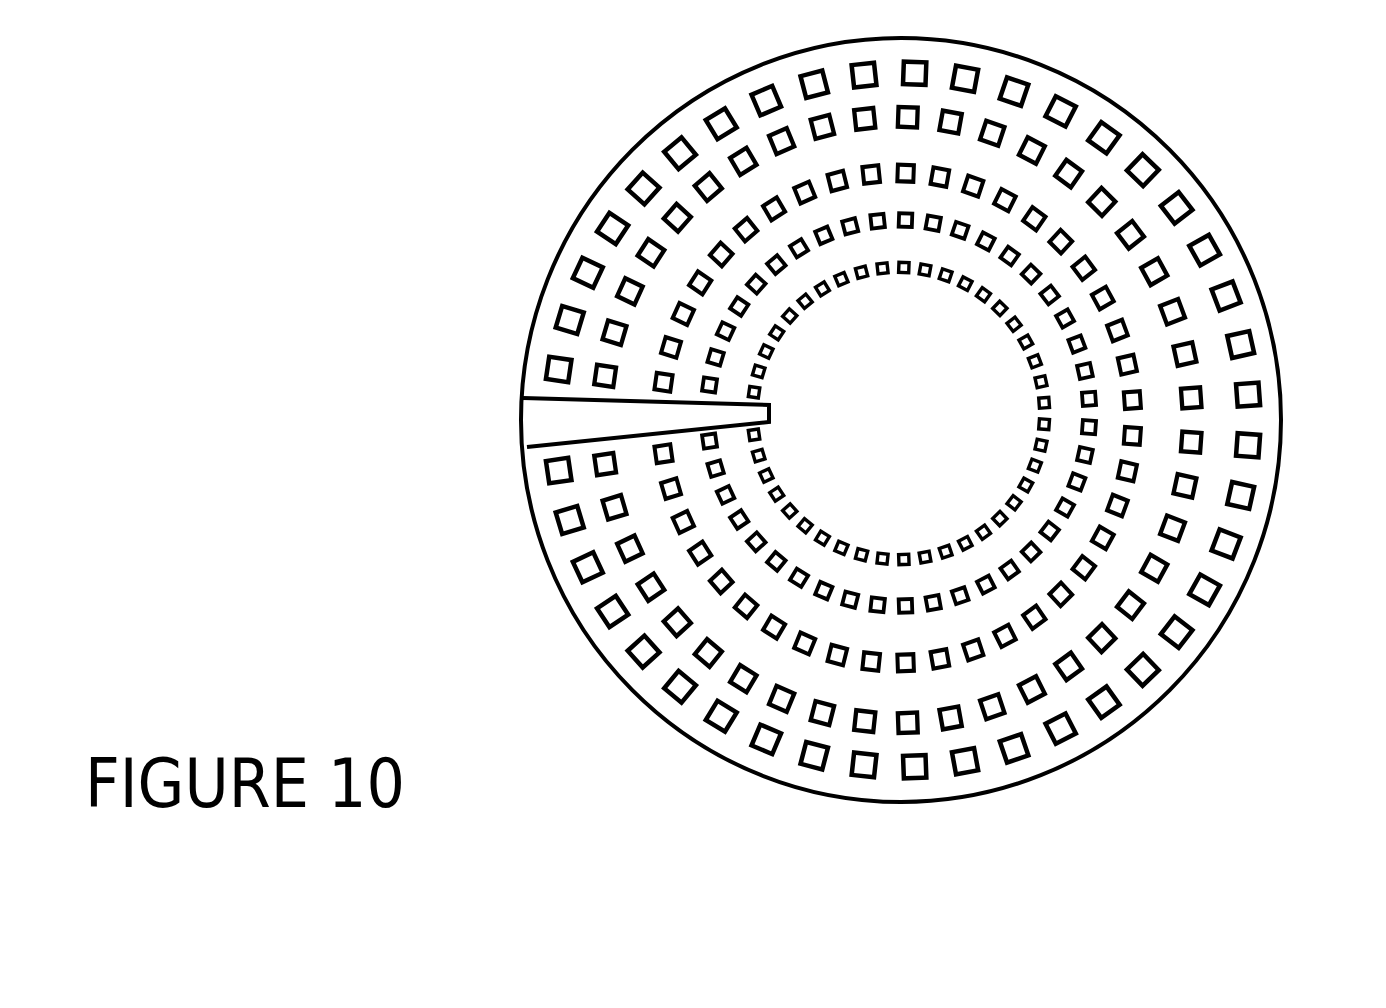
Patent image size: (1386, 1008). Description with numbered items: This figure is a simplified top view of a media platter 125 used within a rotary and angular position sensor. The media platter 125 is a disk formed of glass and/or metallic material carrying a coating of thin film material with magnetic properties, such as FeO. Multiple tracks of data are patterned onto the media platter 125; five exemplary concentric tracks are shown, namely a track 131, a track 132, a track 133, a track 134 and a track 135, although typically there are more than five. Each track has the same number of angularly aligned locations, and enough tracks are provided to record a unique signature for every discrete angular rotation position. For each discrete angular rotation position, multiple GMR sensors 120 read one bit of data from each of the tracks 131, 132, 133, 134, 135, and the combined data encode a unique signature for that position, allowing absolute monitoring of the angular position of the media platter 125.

The GMR sensors 120 is at (540, 419).
The media platter 125 is at (915, 802).
The track 131 is at (1260, 351).
The track 132 is at (1177, 472).
The track 133 is at (1112, 532).
The track 134 is at (1067, 478).
The track 135 is at (1038, 409).